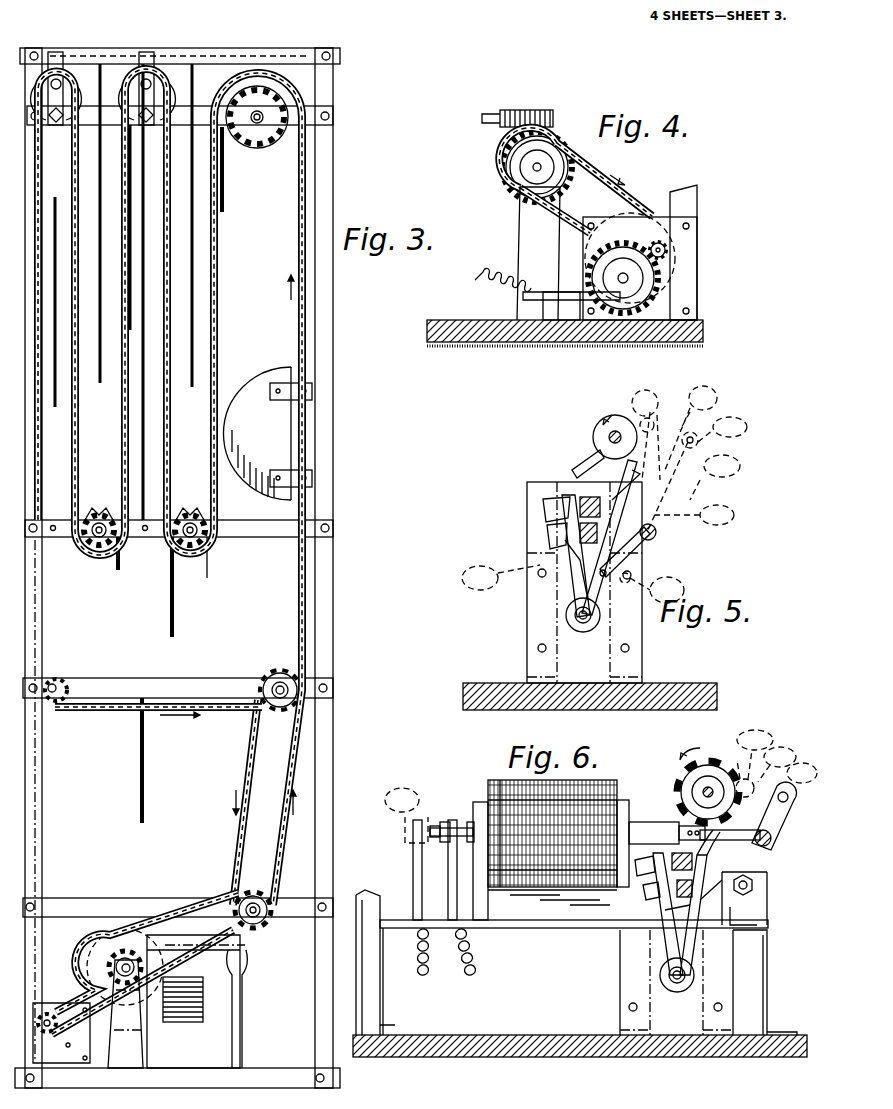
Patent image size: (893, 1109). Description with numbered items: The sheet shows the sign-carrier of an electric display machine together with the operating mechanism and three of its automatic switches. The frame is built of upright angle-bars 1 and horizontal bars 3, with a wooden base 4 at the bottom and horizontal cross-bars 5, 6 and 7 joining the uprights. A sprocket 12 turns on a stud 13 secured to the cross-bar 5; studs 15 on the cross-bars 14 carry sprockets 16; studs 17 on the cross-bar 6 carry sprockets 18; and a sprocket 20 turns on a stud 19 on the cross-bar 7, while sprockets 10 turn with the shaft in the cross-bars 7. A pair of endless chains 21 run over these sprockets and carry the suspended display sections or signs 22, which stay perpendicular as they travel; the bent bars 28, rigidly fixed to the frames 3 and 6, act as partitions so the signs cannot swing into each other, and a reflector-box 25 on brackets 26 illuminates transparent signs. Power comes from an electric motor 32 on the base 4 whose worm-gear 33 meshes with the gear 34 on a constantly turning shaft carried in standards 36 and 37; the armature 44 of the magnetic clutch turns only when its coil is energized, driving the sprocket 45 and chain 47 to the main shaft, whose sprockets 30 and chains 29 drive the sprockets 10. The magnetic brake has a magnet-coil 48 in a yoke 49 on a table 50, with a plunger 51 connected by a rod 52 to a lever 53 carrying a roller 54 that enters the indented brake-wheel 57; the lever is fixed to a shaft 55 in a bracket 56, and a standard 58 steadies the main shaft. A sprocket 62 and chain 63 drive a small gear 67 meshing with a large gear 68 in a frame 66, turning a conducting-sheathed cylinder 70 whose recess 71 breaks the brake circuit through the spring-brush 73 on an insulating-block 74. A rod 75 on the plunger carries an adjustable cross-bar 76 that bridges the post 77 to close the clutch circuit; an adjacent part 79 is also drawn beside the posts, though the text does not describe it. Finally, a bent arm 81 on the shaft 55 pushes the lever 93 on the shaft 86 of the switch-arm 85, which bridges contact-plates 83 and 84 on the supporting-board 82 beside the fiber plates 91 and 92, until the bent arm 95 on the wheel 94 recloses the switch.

In FIG. 3, the upright angle-bar 1 is at (322, 800).
In FIG. 3, the horizontal bar 3 is at (228, 56).
In FIG. 4, the wooden platform or base 4 is at (690, 338).
In FIG. 5, the wooden platform or base 4 is at (688, 690).
In FIG. 6, the wooden platform or base 4 is at (522, 1045).
In FIG. 3, the horizontal cross-bar 5 is at (205, 117).
In FIG. 3, the horizontal cross-bar 6 is at (240, 527).
In FIG. 3, the horizontal cross-bar 7 is at (180, 690).
In FIG. 3, the sprocket 10 is at (280, 680).
In FIG. 3, the sprocket 12 is at (252, 132).
In FIG. 3, the stud 13 is at (262, 122).
In FIG. 3, the cross-bar 14 is at (53, 70).
In FIG. 3, the stud 15 is at (57, 80).
In FIG. 3, the sprocket 16 is at (74, 90).
In FIG. 3, the stud 17 is at (99, 548).
In FIG. 3, the sprocket 18 is at (99, 512).
In FIG. 3, the stud 19 is at (57, 688).
In FIG. 3, the sprocket 20 is at (58, 678).
In FIG. 3, the endless chain 21 is at (42, 608).
In FIG. 3, the display section or sign 22 is at (225, 200).
In FIG. 3, the reflector-box 25 is at (257, 433).
In FIG. 3, the bracket 26 is at (305, 393).
In FIG. 3, the partition bar 28 is at (55, 180).
In FIG. 3, the chain 29 is at (240, 852).
In FIG. 3, the sprocket 30 is at (262, 922).
In FIG. 3, the electric motor 32 is at (197, 1001).
In FIG. 4, the worm-gear 33 is at (536, 110).
In FIG. 4, the gear 34 is at (600, 148).
In FIG. 3, the standard 36 is at (125, 1014).
In FIG. 4, the standard 37 is at (538, 253).
In FIG. 3, the iron disk or armature 44 is at (105, 935).
In FIG. 3, the sprocket 45 is at (122, 955).
In FIG. 3, the chain 47 is at (150, 930).
In FIG. 6, the magnet-coil 48 is at (598, 786).
In FIG. 6, the yoke or frame 49 is at (480, 800).
In FIG. 6, the table or base 50 is at (530, 925).
In FIG. 6, the plunger 51 is at (645, 828).
In FIG. 6, the rod 52 is at (762, 846).
In FIG. 5, the lever 53 is at (702, 442).
In FIG. 6, the lever 53 is at (771, 835).
In FIG. 5, the roller 54 is at (697, 473).
In FIG. 6, the roller 54 is at (777, 762).
In FIG. 5, the shaft 55 is at (656, 532).
In FIG. 6, the bracket 56 is at (765, 902).
In FIG. 6, the indented brake-wheel 57 is at (708, 772).
In FIG. 6, the standard or support 58 is at (757, 918).
In FIG. 4, the sprocket 62 is at (527, 165).
In FIG. 4, the chain 63 is at (565, 233).
In FIG. 4, the frame 66 is at (680, 283).
In FIG. 4, the small gear 67 is at (665, 250).
In FIG. 4, the large gear 68 is at (645, 297).
In FIG. 4, the cylinder 70 is at (630, 288).
In FIG. 4, the offset or recess 71 is at (618, 298).
In FIG. 4, the spring-brush 73 is at (553, 295).
In FIG. 4, the insulating-block 74 is at (520, 305).
In FIG. 6, the rod 75 is at (463, 828).
In FIG. 6, the cross-bar 76 is at (443, 822).
In FIG. 6, the post 77 is at (450, 858).
In FIG. 6, the post 79 is at (418, 882).
In FIG. 5, the bent arm 81 is at (612, 565).
In FIG. 6, the bent arm 81 is at (704, 930).
In FIG. 5, the supporting-board 82 is at (527, 613).
In FIG. 6, the supporting-board 82 is at (708, 982).
In FIG. 5, the terminal or contact-plate 83 is at (582, 500).
In FIG. 6, the terminal or contact-plate 83 is at (680, 865).
In FIG. 5, the terminal or contact-plate 84 is at (562, 500).
In FIG. 6, the terminal or contact-plate 84 is at (660, 900).
In FIG. 5, the switch-arm 85 is at (575, 560).
In FIG. 5, the shaft 86 is at (591, 615).
In FIG. 6, the shaft 86 is at (685, 978).
In FIG. 5, the fiber plate 91 is at (548, 510).
In FIG. 6, the fiber plate 91 is at (640, 862).
In FIG. 5, the fiber plate 92 is at (550, 535).
In FIG. 6, the fiber plate 92 is at (648, 886).
In FIG. 5, the lever 93 is at (612, 508).
In FIG. 6, the lever 93 is at (752, 885).
In FIG. 5, the wheel 94 is at (605, 424).
In FIG. 5, the projecting bent arm 95 is at (584, 462).